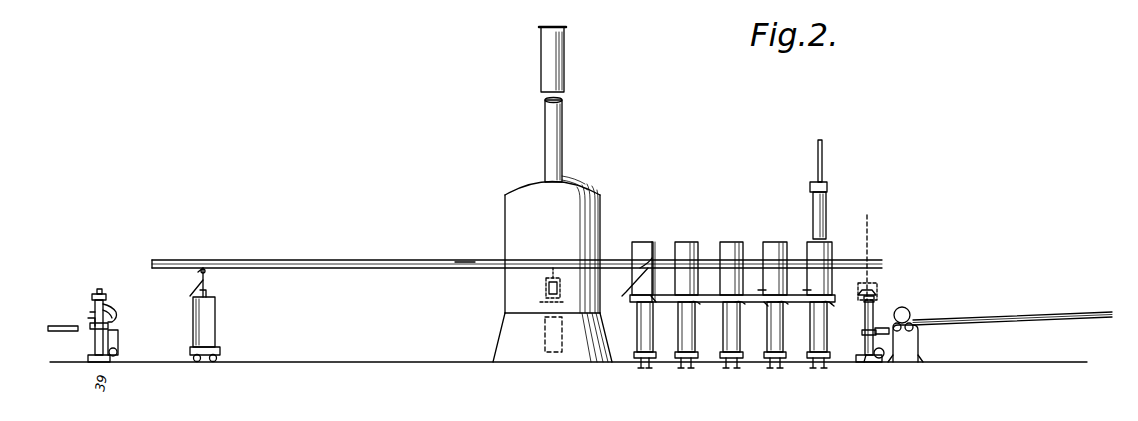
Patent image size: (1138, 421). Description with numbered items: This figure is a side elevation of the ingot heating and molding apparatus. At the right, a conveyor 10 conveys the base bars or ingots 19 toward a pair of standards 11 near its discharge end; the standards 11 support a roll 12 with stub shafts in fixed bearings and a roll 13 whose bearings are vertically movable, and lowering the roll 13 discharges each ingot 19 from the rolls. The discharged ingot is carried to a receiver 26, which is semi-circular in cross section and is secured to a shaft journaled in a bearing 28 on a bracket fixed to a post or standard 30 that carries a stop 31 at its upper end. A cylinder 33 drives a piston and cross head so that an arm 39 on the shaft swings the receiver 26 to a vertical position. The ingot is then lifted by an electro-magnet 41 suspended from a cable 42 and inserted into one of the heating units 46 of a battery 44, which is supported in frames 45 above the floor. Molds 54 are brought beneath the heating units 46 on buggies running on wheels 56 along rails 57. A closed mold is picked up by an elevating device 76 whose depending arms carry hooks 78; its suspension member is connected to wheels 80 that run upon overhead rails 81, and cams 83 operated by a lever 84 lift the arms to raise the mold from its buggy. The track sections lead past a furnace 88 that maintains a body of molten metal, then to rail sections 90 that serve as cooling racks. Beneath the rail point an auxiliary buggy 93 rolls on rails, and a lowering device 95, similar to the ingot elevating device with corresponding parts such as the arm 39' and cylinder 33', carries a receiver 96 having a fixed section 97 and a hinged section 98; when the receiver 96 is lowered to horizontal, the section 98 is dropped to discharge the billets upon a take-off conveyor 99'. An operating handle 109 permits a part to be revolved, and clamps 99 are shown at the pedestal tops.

The conveyor 10 is at (1005, 312).
The standards 11 is at (918, 340).
The roll 12 is at (920, 318).
The roll 13 is at (895, 310).
The base bar or ingot 19 is at (826, 222).
The receiver 26 is at (865, 322).
The bearing 28 is at (863, 336).
The post or standard 30 is at (866, 362).
The stop 31 is at (870, 300).
The cylinder 33 is at (885, 365).
The arm 39 is at (860, 358).
The electro-magnet 41 is at (810, 187).
The cable 42 is at (822, 165).
The battery of heating units 44 is at (767, 242).
The frames 45 is at (706, 290).
The heating unit 46 is at (778, 285).
The molds 54 is at (215, 338).
The wheels 56 is at (652, 368).
The rails 57 is at (689, 368).
The elevating device 76 is at (206, 278).
The hooks 78 is at (657, 302).
The wheels 80 is at (651, 250).
The rails 81 is at (462, 262).
The cams 83 is at (199, 272).
The lever 84 is at (405, 292).
The furnace 88 is at (598, 222).
The rail sections 90 is at (517, 251).
The auxiliary buggy 93 is at (220, 350).
The lowering device 95 is at (90, 312).
The receiver 96 is at (104, 308).
The fixed section 97 is at (116, 320).
The hinged section 98 is at (88, 320).
The clamp 99 is at (761, 317).
The operating handle 109 is at (803, 308).
The take-off conveyor 99' is at (63, 338).
The arm 39' is at (124, 342).
The cylinder 33' is at (125, 351).